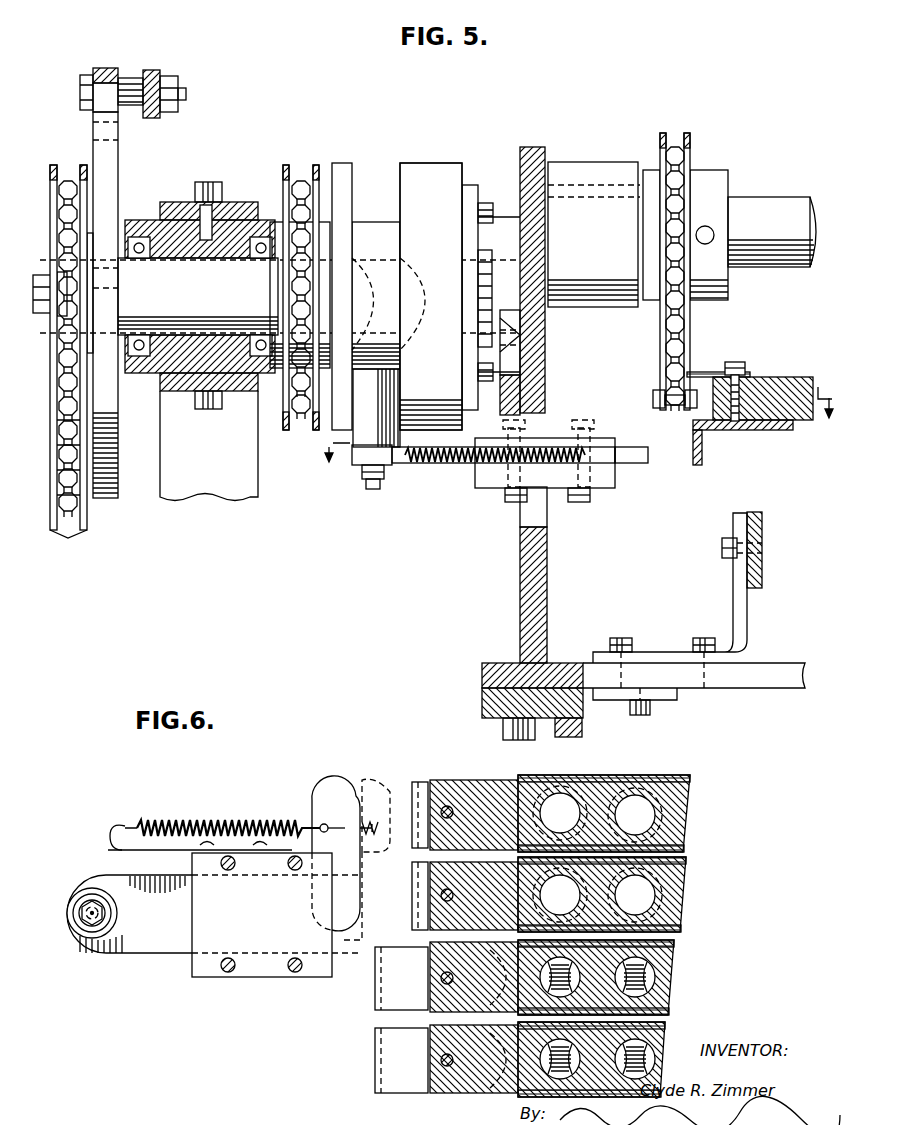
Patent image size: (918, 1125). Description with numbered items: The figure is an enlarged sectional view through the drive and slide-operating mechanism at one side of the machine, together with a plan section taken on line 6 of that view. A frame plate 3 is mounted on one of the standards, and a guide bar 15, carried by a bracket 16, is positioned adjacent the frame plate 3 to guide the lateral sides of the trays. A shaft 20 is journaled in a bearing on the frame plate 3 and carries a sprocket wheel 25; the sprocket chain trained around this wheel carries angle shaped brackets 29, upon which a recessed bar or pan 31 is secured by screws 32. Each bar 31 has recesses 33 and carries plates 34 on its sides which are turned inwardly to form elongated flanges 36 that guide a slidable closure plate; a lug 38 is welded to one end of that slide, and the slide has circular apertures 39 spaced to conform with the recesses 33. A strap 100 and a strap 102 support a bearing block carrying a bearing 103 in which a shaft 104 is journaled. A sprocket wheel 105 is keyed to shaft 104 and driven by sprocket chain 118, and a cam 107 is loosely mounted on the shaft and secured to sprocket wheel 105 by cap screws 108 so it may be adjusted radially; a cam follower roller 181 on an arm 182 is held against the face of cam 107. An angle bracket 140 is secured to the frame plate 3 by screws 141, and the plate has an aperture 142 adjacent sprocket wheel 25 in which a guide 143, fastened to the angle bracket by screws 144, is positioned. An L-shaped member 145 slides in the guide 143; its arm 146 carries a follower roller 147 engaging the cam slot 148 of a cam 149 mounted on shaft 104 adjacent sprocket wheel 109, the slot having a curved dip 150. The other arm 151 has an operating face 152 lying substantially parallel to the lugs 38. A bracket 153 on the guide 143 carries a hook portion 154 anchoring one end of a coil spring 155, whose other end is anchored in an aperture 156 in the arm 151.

In FIG. 5, the frame plate 3 is at (516, 156).
In FIG. 5, the section line 6— 6 is at (573, 421).
In FIG. 5, the guide bar 15 is at (762, 527).
In FIG. 5, the bracket 16 is at (733, 587).
In FIG. 5, the shaft 20 is at (753, 205).
In FIG. 5, the sprocket wheel 25 is at (675, 160).
In FIG. 5, the angle shaped bracket 29 is at (705, 372).
In FIG. 5, the recessed bar or pan 31 is at (792, 374).
In FIG. 6, the recessed bar or pan 31 is at (479, 792).
In FIG. 5, the screw 32 is at (745, 392).
In FIG. 6, the screw 32 is at (448, 806).
In FIG. 6, the recess 33 is at (640, 817).
In FIG. 6, the plate 34 is at (586, 778).
In FIG. 6, the elongated flange 36 is at (618, 782).
In FIG. 5, the lug 38 is at (696, 466).
In FIG. 6, the lug 38 is at (413, 785).
In FIG. 6, the circular aperture 39 is at (667, 779).
In FIG. 5, the strap 100 is at (262, 455).
In FIG. 5, the strap 102 is at (222, 282).
In FIG. 5, the bearing 103 is at (150, 220).
In FIG. 5, the shaft 104 is at (245, 230).
In FIG. 5, the sprocket wheel 105 is at (68, 188).
In FIG. 5, the cam 107 is at (113, 455).
In FIG. 5, the cap screw 108 is at (36, 274).
In FIG. 5, the sprocket wheel 109 is at (303, 188).
In FIG. 5, the sprocket chain 118 is at (72, 506).
In FIG. 5, the angle bracket 140 is at (507, 365).
In FIG. 5, the screw 141 is at (530, 322).
In FIG. 5, the aperture 142 is at (538, 513).
In FIG. 5, the guide 143 is at (493, 478).
In FIG. 6, the guide 143 is at (250, 966).
In FIG. 5, the screw 144 is at (590, 440).
In FIG. 6, the screw 144 is at (275, 932).
In FIG. 6, the L-shaped member 145 is at (160, 937).
In FIG. 5, the arm 146 is at (362, 452).
In FIG. 6, the arm 146 is at (130, 933).
In FIG. 5, the follower roller 147 is at (358, 432).
In FIG. 5, the cam slot 148 is at (377, 188).
In FIG. 5, the cam 149 is at (433, 162).
In FIG. 5, the curved portion or dip 150 is at (431, 296).
In FIG. 6, the arm 151 is at (333, 793).
In FIG. 5, the operating face 152 is at (650, 468).
In FIG. 6, the operating face 152 is at (368, 850).
In FIG. 6, the bracket 153 is at (170, 847).
In FIG. 6, the hook portion 154 is at (122, 826).
In FIG. 5, the coil spring 155 is at (420, 467).
In FIG. 6, the coil spring 155 is at (207, 828).
In FIG. 6, the aperture 156 is at (321, 825).
In FIG. 5, the cam follower roller 181 is at (112, 72).
In FIG. 5, the arm 182 is at (147, 74).